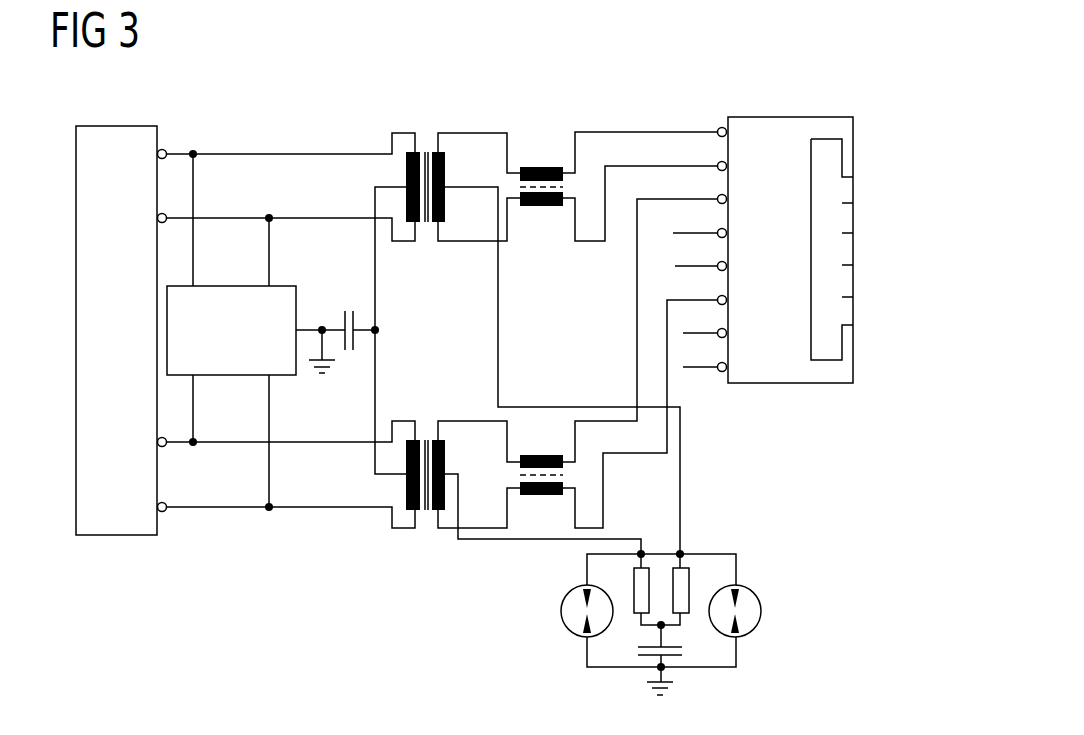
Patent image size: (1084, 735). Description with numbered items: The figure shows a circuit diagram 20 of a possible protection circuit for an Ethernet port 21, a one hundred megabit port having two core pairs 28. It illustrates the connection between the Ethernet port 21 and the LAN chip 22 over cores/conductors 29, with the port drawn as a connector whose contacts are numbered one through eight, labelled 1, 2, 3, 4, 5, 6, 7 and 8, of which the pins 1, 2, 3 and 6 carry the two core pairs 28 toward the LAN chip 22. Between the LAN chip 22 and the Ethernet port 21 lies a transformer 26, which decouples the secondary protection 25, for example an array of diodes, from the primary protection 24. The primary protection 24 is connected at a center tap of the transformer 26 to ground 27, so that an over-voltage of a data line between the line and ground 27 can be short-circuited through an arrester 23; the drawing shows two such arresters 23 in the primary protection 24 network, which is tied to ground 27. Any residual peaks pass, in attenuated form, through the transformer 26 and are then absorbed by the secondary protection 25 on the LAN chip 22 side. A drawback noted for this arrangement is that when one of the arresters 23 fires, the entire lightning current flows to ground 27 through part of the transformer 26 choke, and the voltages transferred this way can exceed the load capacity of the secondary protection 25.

The connector pin 1 is at (715, 118).
The connector pin 2 is at (715, 152).
The connector pin 3 is at (715, 185).
The connector pin 4 is at (715, 219).
The connector pin 5 is at (715, 252).
The connector pin 6 is at (715, 286).
The connector pin 7 is at (715, 319).
The connector pin 8 is at (715, 353).
The circuit diagram 20 is at (870, 188).
The Ethernet port 21 is at (853, 357).
The LAN chip 22 is at (113, 126).
The arrester 23 is at (561, 610).
The primary protection 24 is at (608, 689).
The secondary protection 25 is at (232, 286).
The transformer 26 is at (426, 148).
The ground 27 is at (670, 677).
The core pairs 28 is at (660, 146).
The cores/conductors 29 is at (605, 132).